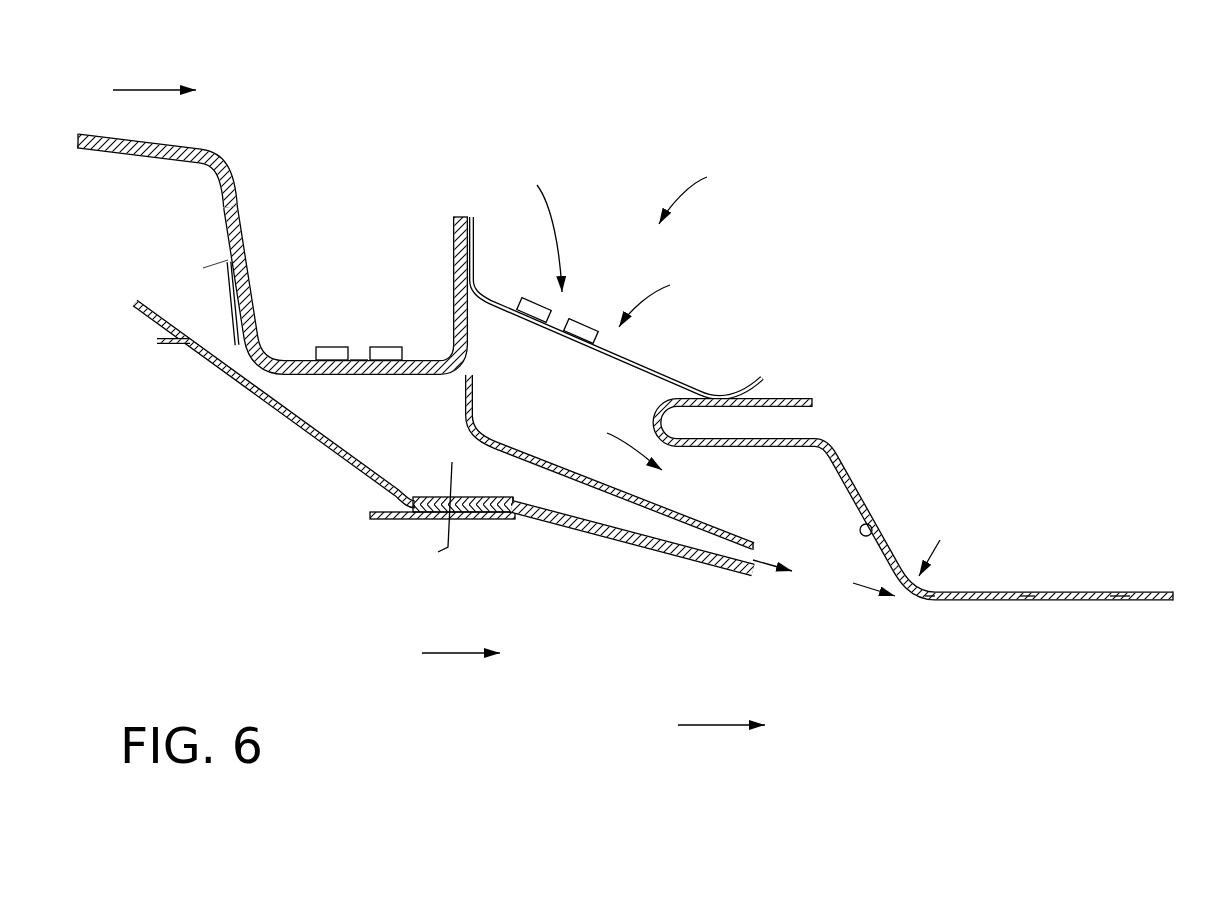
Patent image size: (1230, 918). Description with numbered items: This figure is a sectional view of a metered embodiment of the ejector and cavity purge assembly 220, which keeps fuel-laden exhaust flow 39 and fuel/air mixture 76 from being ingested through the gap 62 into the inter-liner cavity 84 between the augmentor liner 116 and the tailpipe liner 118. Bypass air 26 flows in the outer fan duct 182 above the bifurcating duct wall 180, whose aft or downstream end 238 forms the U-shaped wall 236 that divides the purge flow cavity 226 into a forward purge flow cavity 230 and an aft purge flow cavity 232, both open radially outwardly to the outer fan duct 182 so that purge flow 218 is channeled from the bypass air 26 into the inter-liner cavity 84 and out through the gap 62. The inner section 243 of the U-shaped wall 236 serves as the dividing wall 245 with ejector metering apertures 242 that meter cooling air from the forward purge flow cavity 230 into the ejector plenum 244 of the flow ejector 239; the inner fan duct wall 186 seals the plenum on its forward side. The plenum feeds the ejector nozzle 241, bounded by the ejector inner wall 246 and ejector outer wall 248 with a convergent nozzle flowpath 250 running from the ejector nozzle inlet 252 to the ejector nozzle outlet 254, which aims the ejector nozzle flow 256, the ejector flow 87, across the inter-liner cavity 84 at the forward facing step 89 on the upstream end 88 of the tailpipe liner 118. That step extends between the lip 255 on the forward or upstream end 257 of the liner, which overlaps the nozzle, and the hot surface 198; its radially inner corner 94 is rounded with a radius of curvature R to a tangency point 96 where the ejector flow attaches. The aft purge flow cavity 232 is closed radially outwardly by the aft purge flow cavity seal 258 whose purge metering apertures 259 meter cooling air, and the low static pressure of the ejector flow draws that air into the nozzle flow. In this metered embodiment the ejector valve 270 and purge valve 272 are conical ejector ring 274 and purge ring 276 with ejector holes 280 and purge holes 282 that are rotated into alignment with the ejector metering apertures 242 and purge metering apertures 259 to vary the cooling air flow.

The outer fan duct 182 is at (198, 61).
The bypass air 26 is at (150, 89).
The aft or downstream end 238 is at (118, 165).
The bifurcating duct wall 180 is at (154, 159).
The U-shaped wall 236 is at (242, 211).
The inner fan duct wall 186 is at (231, 288).
The forward purge flow cavity 230 is at (273, 258).
The ejector ring 274 is at (340, 347).
The ejector valve 270 is at (382, 347).
The ejector holes 280 is at (360, 347).
The inner section 243 is at (290, 375).
The ejector metering apertures 242 is at (367, 375).
The dividing wall 245 is at (285, 378).
The ejector plenum 244 is at (430, 448).
The augmentor liner 116 is at (393, 519).
The ejector nozzle inlet 252 is at (450, 517).
The nozzle flowpath 250 is at (538, 495).
The ejector inner wall 246 is at (583, 530).
The ejector nozzle 241 is at (632, 575).
The flow ejector 239 is at (611, 462).
The ejector outer wall 248 is at (655, 507).
The aft purge flow cavity seal 258 is at (503, 308).
The purge ring 276 is at (548, 298).
The purge holes 282 is at (553, 315).
The purge valve 272 is at (599, 339).
The purge metering apertures 259 is at (553, 330).
The purge flow 218 is at (557, 228).
The ejector and cavity purge assembly 220 is at (709, 195).
The purge flow cavity 226 is at (668, 301).
The aft purge flow cavity 232 is at (615, 416).
The lip 255 is at (736, 442).
The forward or upstream end 257 is at (820, 438).
The inter-liner cavity 84 is at (778, 485).
The forward facing step 89 is at (873, 533).
The radially inner corner 94 is at (905, 598).
The upstream end 88 is at (937, 597).
The tangency point 96 is at (930, 601).
The hot surface 198 is at (1027, 601).
The tailpipe liner 118 is at (1120, 601).
The radius of curvature R is at (930, 555).
The ejector nozzle outlet 254 is at (767, 565).
The ejector flow 87 is at (775, 557).
The ejector nozzle flow 256 is at (866, 584).
The gap 62 is at (830, 585).
The fuel/air mixture 76 is at (450, 655).
The exhaust flow 39 is at (714, 722).